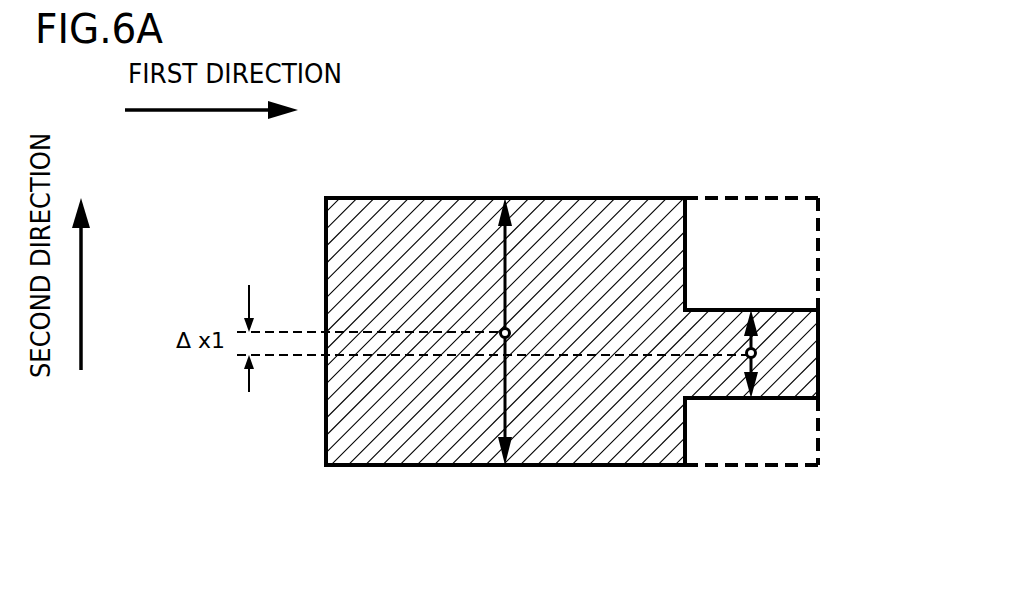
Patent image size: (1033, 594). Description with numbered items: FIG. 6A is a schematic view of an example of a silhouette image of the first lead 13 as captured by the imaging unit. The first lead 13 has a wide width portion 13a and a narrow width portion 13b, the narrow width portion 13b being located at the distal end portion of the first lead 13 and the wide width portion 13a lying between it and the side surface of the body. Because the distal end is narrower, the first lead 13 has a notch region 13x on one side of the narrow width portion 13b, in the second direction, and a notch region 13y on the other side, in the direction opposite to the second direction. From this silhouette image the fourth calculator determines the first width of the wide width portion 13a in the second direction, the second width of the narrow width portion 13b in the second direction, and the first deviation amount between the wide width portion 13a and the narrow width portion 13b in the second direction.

The first lead 13 is at (825, 124).
The wide width portion 13a is at (550, 240).
The narrow width portion 13b is at (775, 332).
The notch region 13x is at (773, 243).
The notch region 13y is at (773, 422).